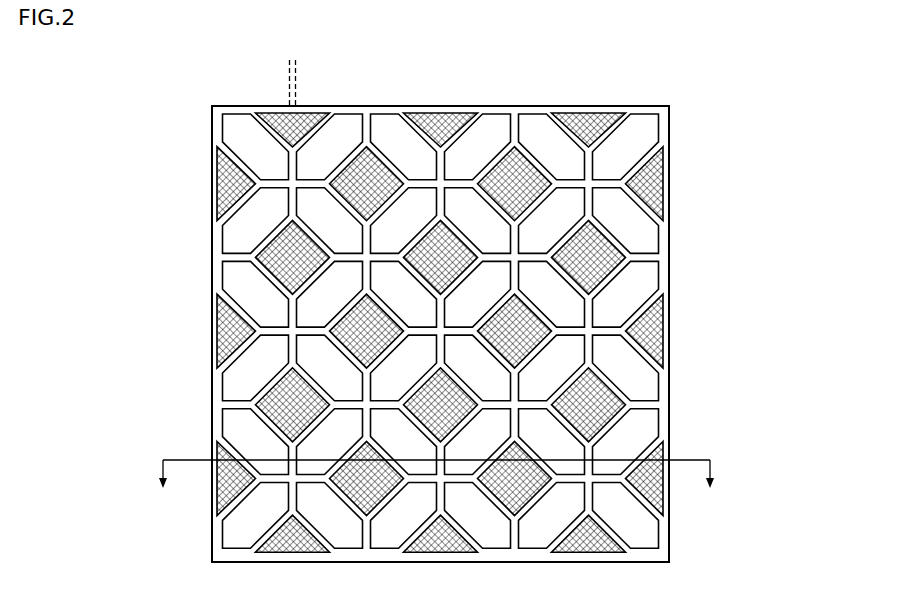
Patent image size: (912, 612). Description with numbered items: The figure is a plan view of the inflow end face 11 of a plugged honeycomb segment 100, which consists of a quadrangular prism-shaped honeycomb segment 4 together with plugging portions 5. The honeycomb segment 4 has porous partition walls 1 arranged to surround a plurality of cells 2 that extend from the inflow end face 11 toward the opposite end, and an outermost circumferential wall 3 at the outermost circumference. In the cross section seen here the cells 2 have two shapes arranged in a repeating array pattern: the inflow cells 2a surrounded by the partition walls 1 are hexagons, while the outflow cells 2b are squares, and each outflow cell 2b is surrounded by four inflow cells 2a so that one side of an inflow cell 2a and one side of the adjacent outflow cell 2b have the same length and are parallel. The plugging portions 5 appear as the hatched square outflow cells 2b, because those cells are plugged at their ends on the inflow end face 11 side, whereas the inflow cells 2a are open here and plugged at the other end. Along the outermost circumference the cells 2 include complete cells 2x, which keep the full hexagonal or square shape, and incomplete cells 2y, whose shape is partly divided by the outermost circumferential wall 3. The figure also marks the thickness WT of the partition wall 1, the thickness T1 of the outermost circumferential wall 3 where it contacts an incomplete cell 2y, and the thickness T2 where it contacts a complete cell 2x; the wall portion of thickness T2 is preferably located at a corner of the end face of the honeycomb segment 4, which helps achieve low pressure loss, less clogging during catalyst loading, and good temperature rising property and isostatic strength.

The plugged honeycomb segment 100 is at (748, 52).
The partition walls 1 is at (507, 147).
The cells 2 is at (440, 332).
The inflow cells 2a is at (553, 148).
The outflow cells 2b is at (390, 167).
The complete cells 2x is at (413, 132).
The incomplete cells 2y is at (660, 183).
The outermost circumferential wall 3 is at (667, 272).
The honeycomb segment 4 is at (378, 102).
The plugging portions 5 is at (590, 402).
The inflow end face 11 is at (227, 101).
The thickness of the partition wall WT is at (322, 71).
The thickness of the outermost circumferential wall in contact with the incomplete c T1 is at (250, 240).
The thickness of the outermost circumferential wall in contact with the complete cel T2 is at (250, 132).